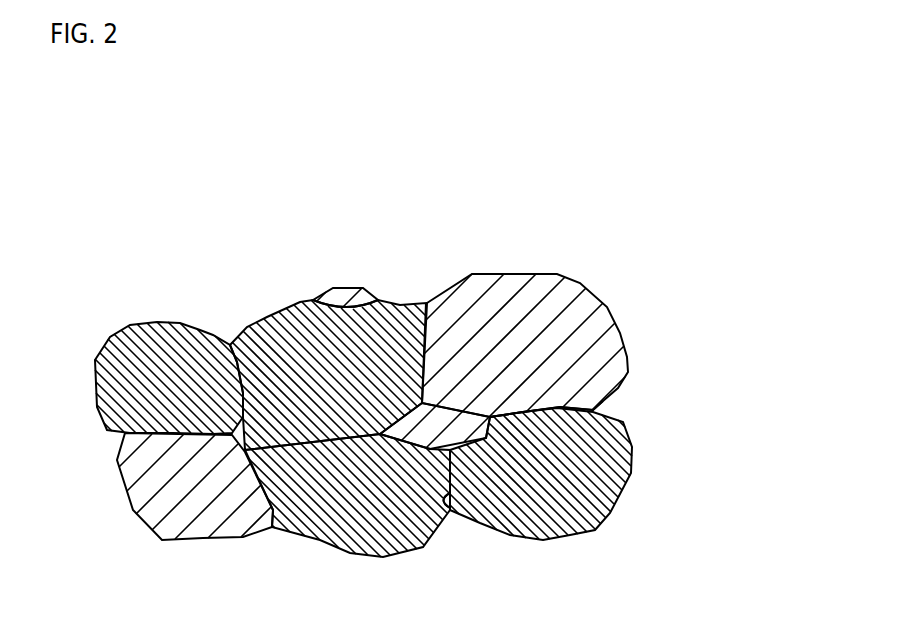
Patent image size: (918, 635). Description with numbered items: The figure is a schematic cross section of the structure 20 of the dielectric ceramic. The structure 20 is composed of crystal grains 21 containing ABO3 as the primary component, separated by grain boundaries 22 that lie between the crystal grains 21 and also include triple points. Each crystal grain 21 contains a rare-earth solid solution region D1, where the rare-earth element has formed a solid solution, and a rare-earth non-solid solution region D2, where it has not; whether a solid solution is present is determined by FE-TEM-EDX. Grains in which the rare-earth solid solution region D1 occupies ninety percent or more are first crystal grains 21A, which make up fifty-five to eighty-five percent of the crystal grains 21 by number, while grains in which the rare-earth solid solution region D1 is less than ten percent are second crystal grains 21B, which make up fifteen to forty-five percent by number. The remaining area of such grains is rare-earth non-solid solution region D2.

The structure of the dielectric ceramic 20 is at (312, 232).
The crystal grain 21 is at (748, 403).
The first crystal grain 21A is at (632, 455).
The second crystal grain 21B is at (603, 400).
The grain boundary 22 is at (453, 512).
The rare-earth solid solution region D1 is at (258, 352).
The rare-earth non-solid solution region D2 is at (447, 317).